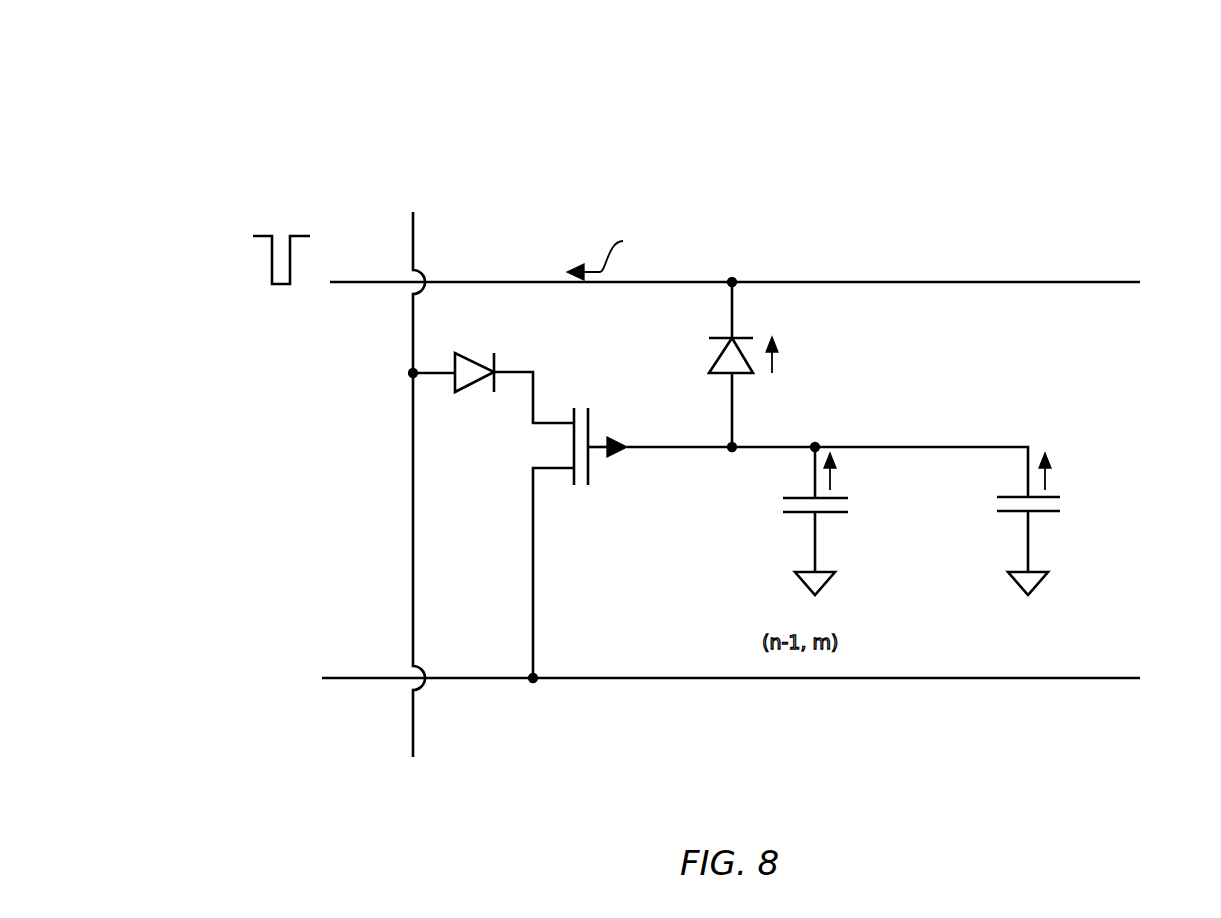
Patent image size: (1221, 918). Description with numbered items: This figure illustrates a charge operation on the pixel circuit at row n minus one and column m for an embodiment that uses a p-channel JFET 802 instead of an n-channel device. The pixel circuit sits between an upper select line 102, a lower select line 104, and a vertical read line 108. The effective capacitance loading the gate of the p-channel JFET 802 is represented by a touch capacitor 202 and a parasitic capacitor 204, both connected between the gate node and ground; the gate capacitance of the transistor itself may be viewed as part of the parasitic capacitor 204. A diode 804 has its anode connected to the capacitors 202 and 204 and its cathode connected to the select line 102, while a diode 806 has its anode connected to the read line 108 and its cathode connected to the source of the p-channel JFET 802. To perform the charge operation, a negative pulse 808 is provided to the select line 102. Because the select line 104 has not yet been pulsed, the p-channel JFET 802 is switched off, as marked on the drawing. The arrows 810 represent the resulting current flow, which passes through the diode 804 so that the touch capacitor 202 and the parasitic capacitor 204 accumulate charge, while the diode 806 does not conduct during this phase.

The select line 102 is at (359, 281).
The select line 104 is at (358, 677).
The read line 108 is at (412, 738).
The touch capacitor 202 is at (803, 524).
The parasitic capacitor 204 is at (1016, 524).
The p-channel JFET 802 is at (587, 499).
The diode 804 is at (717, 355).
The diode 806 is at (472, 360).
The negative pulse 808 is at (272, 257).
The arrows 810 is at (1083, 478).